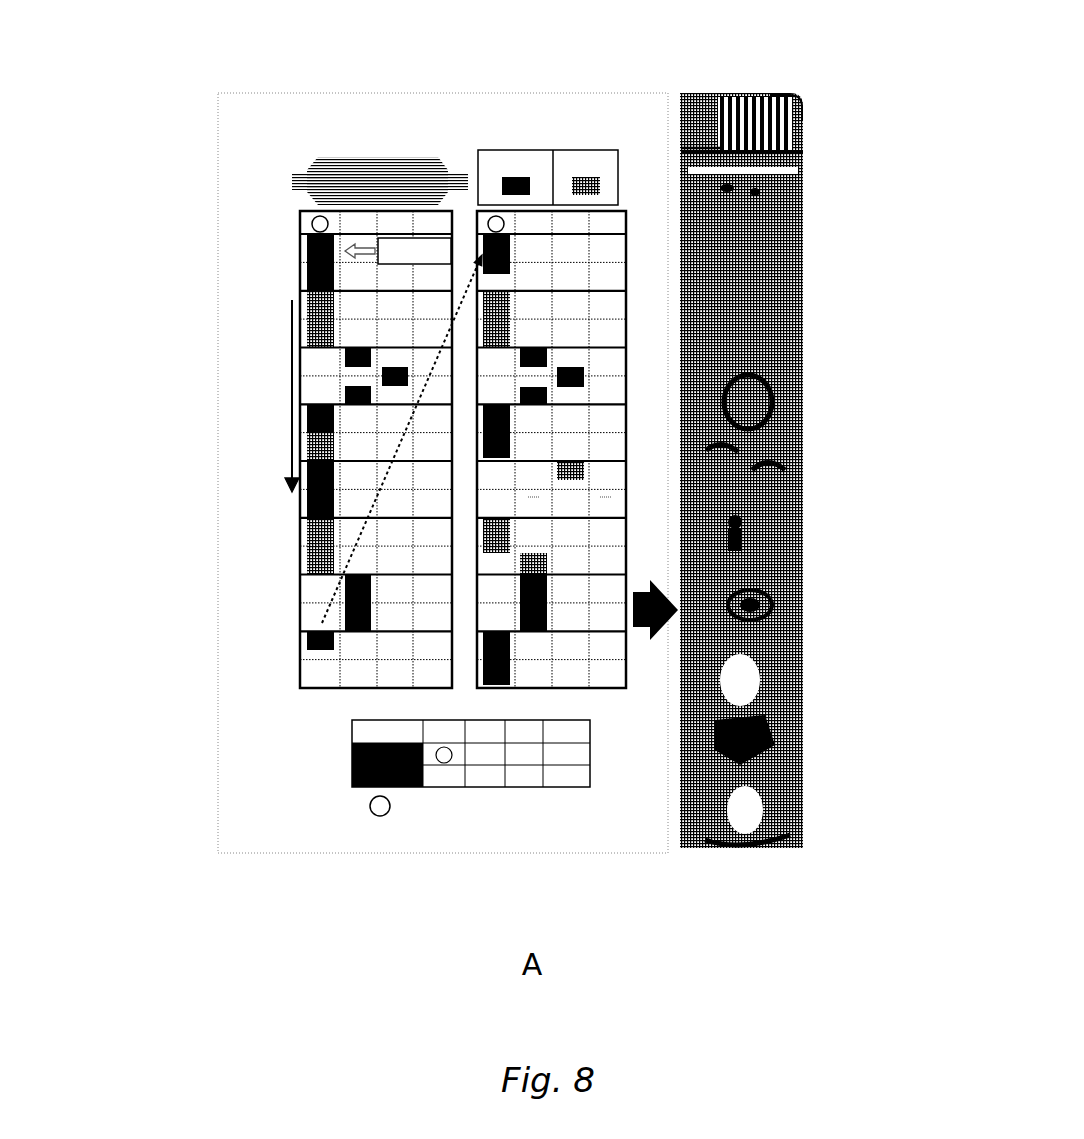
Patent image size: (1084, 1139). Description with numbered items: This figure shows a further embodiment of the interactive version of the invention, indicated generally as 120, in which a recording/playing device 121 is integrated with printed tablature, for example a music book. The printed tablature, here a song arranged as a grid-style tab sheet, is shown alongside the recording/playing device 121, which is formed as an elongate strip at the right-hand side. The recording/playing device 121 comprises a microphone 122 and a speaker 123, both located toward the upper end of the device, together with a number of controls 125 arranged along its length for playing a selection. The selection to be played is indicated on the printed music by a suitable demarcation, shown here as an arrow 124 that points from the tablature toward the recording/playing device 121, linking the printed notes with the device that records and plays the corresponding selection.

The interactive version of the present invention 120 is at (364, 432).
The recording/playing device 121 is at (794, 439).
The microphone 122 is at (748, 90).
The speaker 123 is at (778, 93).
The arrow 124 is at (648, 582).
The controls 125 is at (790, 620).